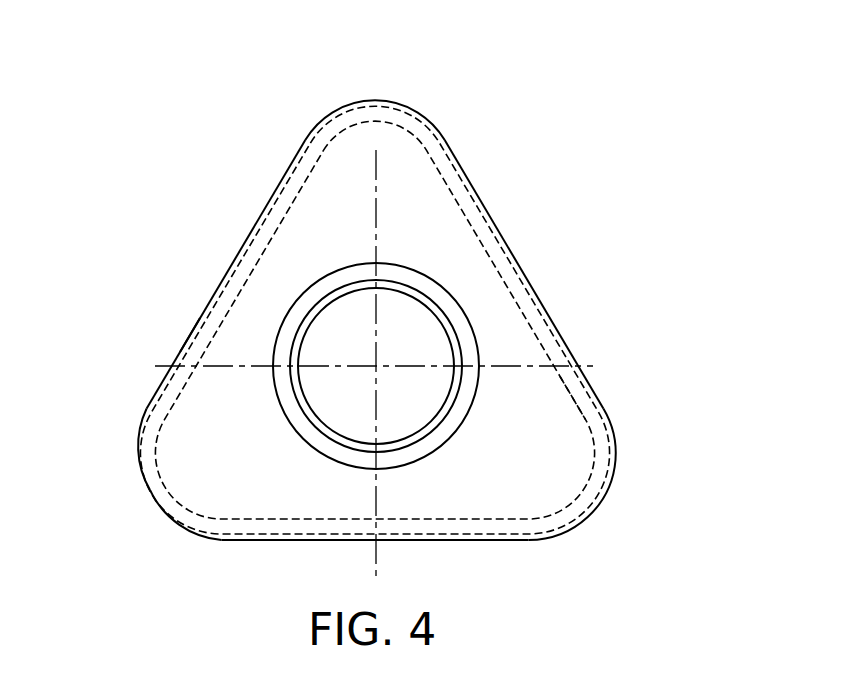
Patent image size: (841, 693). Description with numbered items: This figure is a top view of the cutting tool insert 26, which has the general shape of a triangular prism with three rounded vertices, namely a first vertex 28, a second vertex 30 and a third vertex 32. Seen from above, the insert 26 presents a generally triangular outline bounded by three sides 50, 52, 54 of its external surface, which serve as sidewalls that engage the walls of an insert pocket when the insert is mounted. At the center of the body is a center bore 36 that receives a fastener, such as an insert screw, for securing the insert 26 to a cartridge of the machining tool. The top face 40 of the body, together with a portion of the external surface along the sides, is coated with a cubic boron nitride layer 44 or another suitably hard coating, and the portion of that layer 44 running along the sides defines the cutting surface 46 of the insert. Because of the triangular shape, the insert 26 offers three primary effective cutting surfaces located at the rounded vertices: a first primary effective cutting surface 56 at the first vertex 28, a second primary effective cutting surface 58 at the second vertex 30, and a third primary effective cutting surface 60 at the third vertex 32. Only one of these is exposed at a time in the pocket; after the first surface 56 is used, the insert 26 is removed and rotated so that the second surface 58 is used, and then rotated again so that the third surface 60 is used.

The cutting tool insert 26 is at (553, 214).
The first vertex 28 is at (377, 176).
The second vertex 30 is at (608, 498).
The third vertex 32 is at (148, 503).
The center bore 36 is at (377, 366).
The top face 40 is at (278, 270).
The cubic boron nitride layer 44 is at (512, 415).
The cutting surface 46 is at (190, 333).
The first side 50 is at (552, 286).
The second side 52 is at (453, 562).
The third side 54 is at (203, 275).
The first primary effective cutting surface 56 is at (374, 88).
The second primary effective cutting surface 58 is at (616, 468).
The third primary effective cutting surface 60 is at (158, 515).